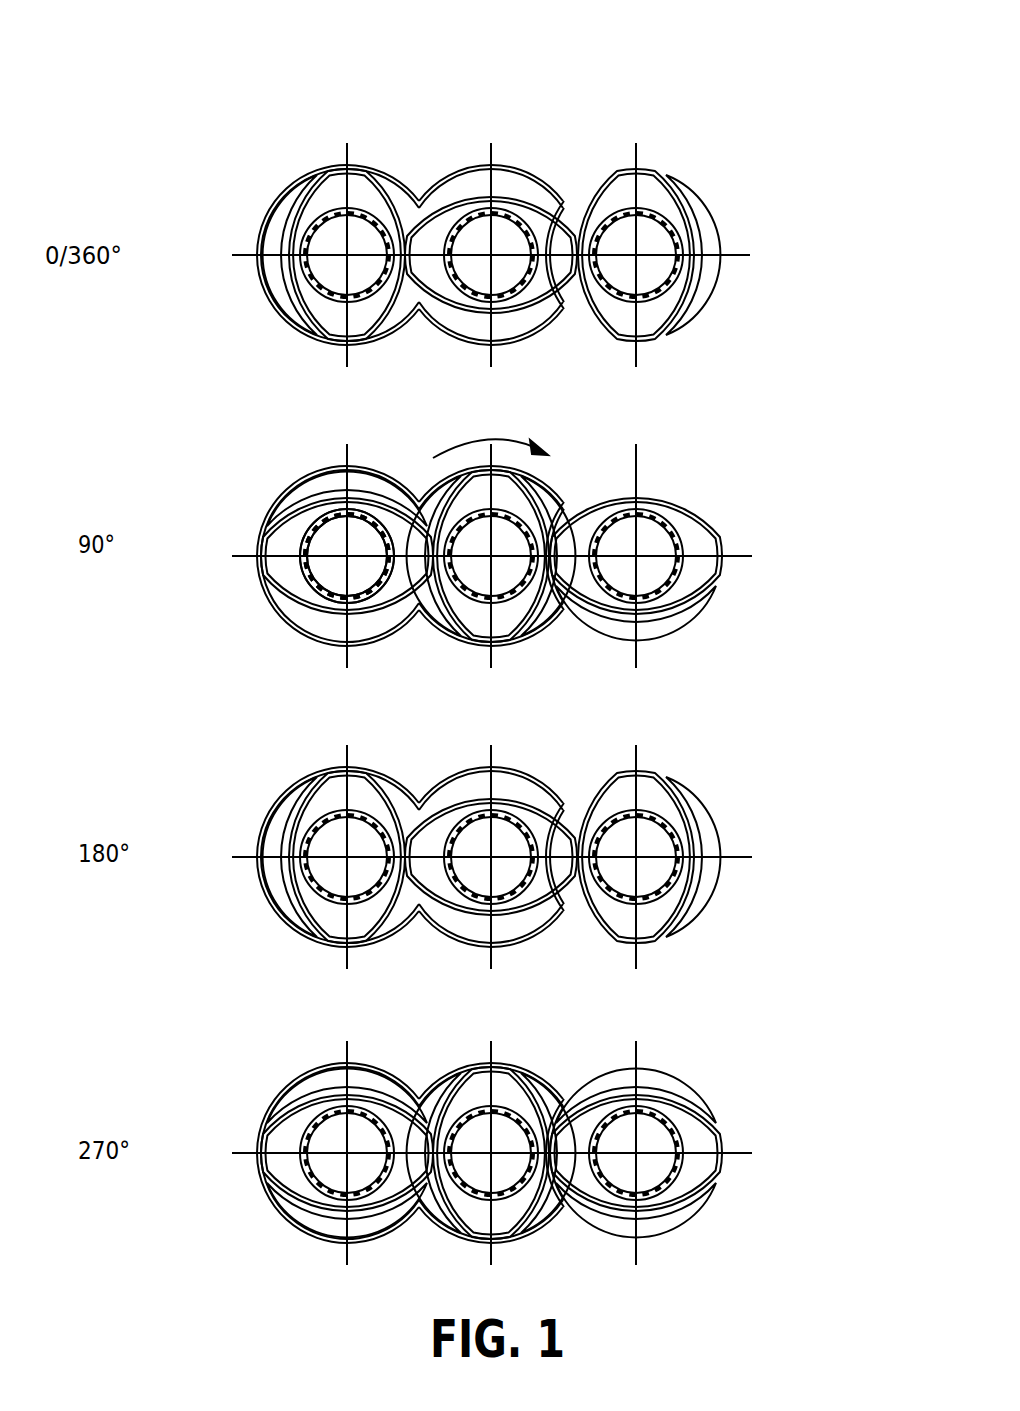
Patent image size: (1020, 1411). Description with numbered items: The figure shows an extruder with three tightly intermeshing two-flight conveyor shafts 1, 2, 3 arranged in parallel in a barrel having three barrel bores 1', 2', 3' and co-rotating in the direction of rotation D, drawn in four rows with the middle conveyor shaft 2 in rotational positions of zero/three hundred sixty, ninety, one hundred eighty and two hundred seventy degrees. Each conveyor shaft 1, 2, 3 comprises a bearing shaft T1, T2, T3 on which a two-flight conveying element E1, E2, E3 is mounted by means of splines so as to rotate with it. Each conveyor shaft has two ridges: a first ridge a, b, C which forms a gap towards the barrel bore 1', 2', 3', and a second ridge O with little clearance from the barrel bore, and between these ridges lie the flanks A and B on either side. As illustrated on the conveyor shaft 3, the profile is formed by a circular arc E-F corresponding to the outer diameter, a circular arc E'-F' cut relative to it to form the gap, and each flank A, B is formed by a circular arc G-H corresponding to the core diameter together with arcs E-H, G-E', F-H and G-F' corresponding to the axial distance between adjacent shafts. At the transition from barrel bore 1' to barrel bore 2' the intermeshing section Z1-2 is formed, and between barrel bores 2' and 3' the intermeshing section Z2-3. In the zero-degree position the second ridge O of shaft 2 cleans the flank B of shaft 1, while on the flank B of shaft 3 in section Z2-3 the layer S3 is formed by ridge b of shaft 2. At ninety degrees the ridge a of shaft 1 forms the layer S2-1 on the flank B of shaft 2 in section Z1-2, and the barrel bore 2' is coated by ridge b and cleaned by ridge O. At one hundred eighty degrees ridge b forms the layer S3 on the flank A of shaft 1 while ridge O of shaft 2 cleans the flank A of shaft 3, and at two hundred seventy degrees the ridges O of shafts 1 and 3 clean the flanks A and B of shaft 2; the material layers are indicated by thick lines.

The conveyor shaft 1 is at (347, 188).
The conveyor shaft 2 is at (504, 188).
The conveyor shaft 3 is at (636, 188).
The barrel bore 1' is at (338, 280).
The barrel bore 2' is at (496, 273).
The barrel bore 3' is at (657, 280).
The bearing shaft T1 is at (330, 277).
The bearing shaft T2 is at (490, 273).
The bearing shaft T3 is at (660, 277).
The two-flight conveying element E1 is at (323, 208).
The two-flight conveying element E2 is at (533, 220).
The two-flight conveying element E3 is at (665, 205).
The layer of free-flowing material S3 is at (593, 332).
The layer of free-flowing material S2-1 is at (428, 625).
The intermeshing section Z1-2 is at (418, 494).
The intermeshing section Z2-3 is at (568, 492).
The direction of rotation D is at (487, 440).
The first ridge a is at (352, 162).
The first ridge b is at (631, 160).
The second ridge O is at (408, 253).
The flank A is at (488, 200).
The flank B is at (505, 328).
The first ridge C is at (636, 556).
The profile point E is at (619, 1066).
The profile point E' is at (687, 1151).
The profile point F is at (624, 1238).
The profile point F' is at (729, 1153).
The profile point G is at (657, 1103).
The profile point H is at (605, 1102).